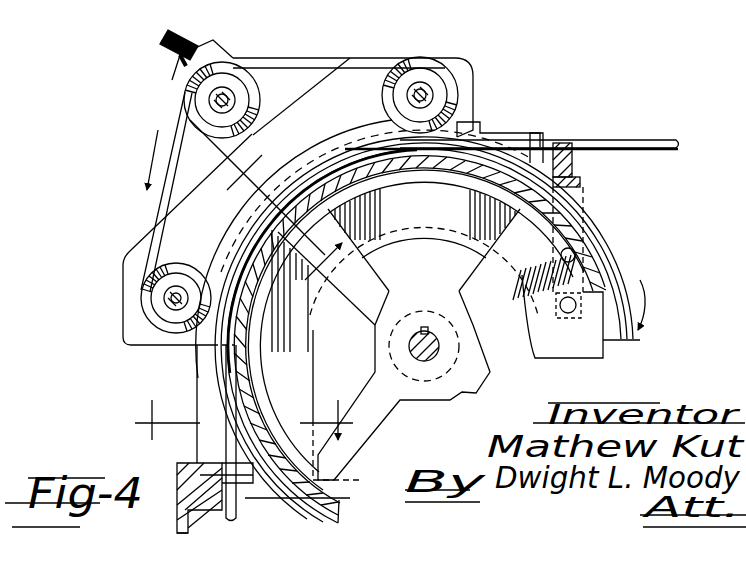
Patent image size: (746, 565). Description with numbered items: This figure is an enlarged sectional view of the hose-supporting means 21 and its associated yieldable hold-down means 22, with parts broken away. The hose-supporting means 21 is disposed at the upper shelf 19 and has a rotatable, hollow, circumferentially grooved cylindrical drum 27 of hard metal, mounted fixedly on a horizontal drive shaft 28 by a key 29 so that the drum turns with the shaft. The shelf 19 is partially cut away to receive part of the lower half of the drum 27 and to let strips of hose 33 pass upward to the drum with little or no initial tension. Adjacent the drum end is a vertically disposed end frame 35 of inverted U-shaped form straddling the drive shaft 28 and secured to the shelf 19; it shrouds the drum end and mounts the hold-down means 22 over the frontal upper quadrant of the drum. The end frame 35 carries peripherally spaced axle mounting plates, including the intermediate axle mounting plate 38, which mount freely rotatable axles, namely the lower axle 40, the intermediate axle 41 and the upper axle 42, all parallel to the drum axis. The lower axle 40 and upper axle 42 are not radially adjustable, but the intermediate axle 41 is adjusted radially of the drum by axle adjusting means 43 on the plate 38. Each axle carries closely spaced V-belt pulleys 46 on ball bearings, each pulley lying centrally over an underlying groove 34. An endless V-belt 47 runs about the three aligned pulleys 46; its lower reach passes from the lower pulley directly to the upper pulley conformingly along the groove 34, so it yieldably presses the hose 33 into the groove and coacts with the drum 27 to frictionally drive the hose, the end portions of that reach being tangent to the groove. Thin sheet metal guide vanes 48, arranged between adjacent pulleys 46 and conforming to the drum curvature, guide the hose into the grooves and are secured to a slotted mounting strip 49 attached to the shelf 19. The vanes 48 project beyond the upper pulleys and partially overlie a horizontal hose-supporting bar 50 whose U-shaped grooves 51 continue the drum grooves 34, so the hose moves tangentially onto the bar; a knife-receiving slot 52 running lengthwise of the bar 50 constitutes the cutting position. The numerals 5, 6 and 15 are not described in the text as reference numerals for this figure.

The section line 5- 5 is at (244, 408).
The section line 6- 6 is at (275, 225).
The base 15 is at (177, 522).
The upper shelf 19 is at (248, 498).
The hose-supporting means 21 is at (641, 324).
The yieldable hold-down means 22 is at (112, 88).
The hollow drum 27 is at (612, 342).
The drive shaft 28 is at (432, 348).
The key 29 is at (429, 330).
The hose 33 is at (670, 139).
The groove 34 is at (596, 250).
The end frame 35 is at (558, 352).
The intermediate axle mounting plate 38 is at (172, 80).
The lower axle 40 is at (170, 298).
The intermediate axle 41 is at (216, 100).
The upper axle 42 is at (430, 92).
The axle adjusting means 43 is at (172, 45).
The V-belt pulley 46 is at (225, 83).
The endless V-belt 47 is at (302, 58).
The guide vane 48 is at (460, 130).
The mounting strip 49 is at (178, 468).
The hose-supporting bar 50 is at (582, 180).
The groove 51 is at (536, 140).
The knife-receiving slot 52 is at (575, 160).